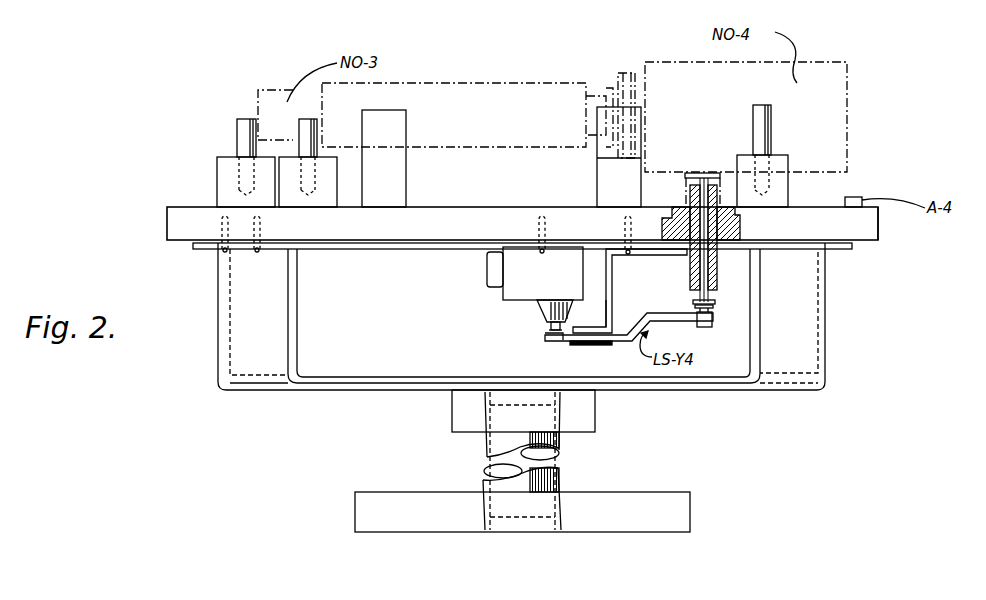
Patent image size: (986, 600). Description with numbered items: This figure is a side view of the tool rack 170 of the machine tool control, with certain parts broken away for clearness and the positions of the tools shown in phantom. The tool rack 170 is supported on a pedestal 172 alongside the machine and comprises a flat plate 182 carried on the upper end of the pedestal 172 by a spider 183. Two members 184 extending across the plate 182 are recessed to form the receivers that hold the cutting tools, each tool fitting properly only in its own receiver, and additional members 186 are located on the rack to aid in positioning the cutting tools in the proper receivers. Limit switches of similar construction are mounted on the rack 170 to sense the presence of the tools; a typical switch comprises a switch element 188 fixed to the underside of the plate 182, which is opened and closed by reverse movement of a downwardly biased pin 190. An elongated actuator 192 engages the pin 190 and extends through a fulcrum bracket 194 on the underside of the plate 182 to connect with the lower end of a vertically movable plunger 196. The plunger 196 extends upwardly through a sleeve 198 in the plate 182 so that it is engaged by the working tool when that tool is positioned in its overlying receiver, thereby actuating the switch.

The tool rack 170 is at (882, 239).
The pedestal 172 is at (563, 442).
The flat plate 182 is at (138, 223).
The spider 183 is at (265, 317).
The members 184 is at (388, 190).
The additional members 186 is at (243, 137).
The switch element 188 is at (462, 317).
The downwardly biased pin 190 is at (518, 348).
The elongated actuator 192 is at (603, 364).
The fulcrum bracket 194 is at (613, 300).
The plunger 196 is at (706, 276).
The sleeve 198 is at (688, 258).